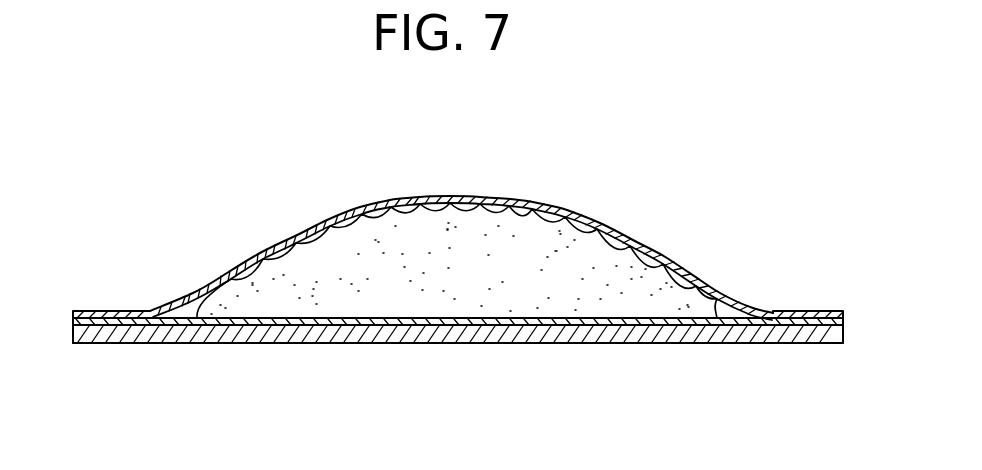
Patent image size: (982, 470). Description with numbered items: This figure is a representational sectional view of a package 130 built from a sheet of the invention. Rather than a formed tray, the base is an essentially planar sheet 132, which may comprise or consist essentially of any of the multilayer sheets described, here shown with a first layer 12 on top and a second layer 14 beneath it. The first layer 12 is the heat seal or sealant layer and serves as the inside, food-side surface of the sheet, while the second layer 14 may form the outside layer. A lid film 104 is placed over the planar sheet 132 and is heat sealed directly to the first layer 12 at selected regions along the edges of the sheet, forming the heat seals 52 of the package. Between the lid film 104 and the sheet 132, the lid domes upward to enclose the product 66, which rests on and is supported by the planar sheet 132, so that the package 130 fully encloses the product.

The package 130 is at (347, 167).
The lid film 104 is at (535, 200).
The heat seals 52 is at (105, 310).
The product 66 is at (470, 282).
The first layer 12 is at (843, 323).
The second layer 14 is at (843, 337).
The planar sheet 132 is at (360, 345).